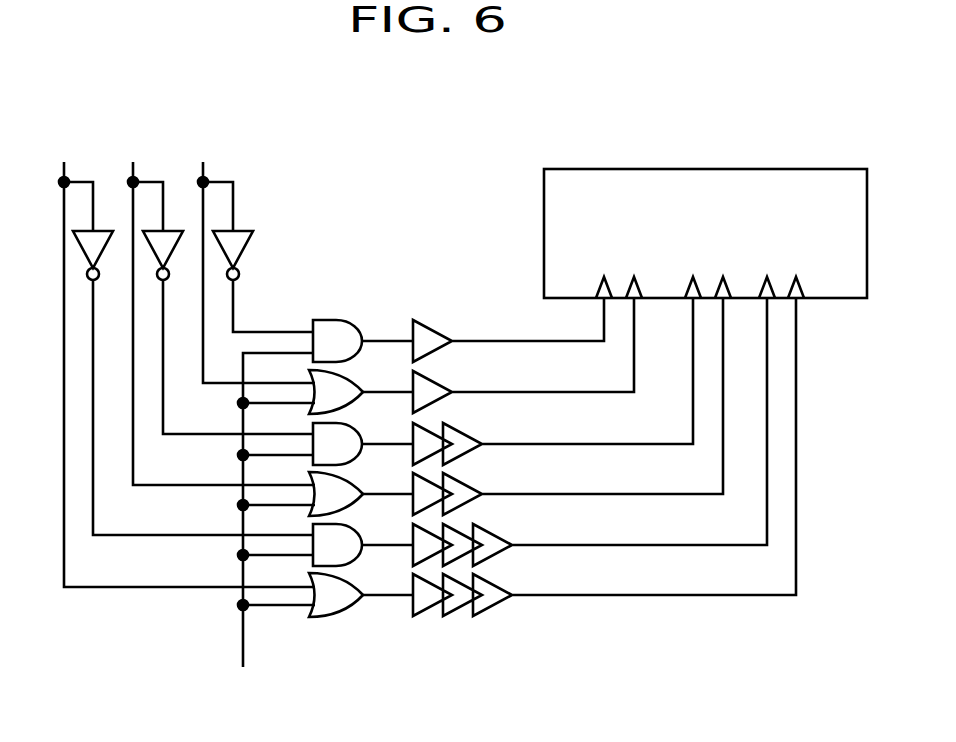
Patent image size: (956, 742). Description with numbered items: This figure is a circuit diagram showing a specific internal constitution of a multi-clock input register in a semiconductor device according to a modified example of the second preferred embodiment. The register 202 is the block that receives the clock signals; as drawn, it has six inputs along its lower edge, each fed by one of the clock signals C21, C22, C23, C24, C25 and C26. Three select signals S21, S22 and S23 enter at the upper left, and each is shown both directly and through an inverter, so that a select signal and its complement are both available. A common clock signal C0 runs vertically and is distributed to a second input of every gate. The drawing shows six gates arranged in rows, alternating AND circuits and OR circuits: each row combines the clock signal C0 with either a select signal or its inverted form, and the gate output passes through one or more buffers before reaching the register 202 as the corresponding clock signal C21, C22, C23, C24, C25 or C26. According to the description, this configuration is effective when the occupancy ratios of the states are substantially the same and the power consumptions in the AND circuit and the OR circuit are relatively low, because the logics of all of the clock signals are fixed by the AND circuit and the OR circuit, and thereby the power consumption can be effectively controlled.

The register 202 is at (703, 169).
The select signal S21 is at (247, 254).
The select signal S22 is at (212, 305).
The select signal S23 is at (178, 356).
The clock signal C0 is at (268, 533).
The clock signal C21 is at (458, 330).
The clock signal C22 is at (471, 356).
The clock signal C23 is at (503, 381).
The clock signal C24 is at (516, 407).
The clock signal C25 is at (540, 432).
The clock signal C26 is at (552, 457).